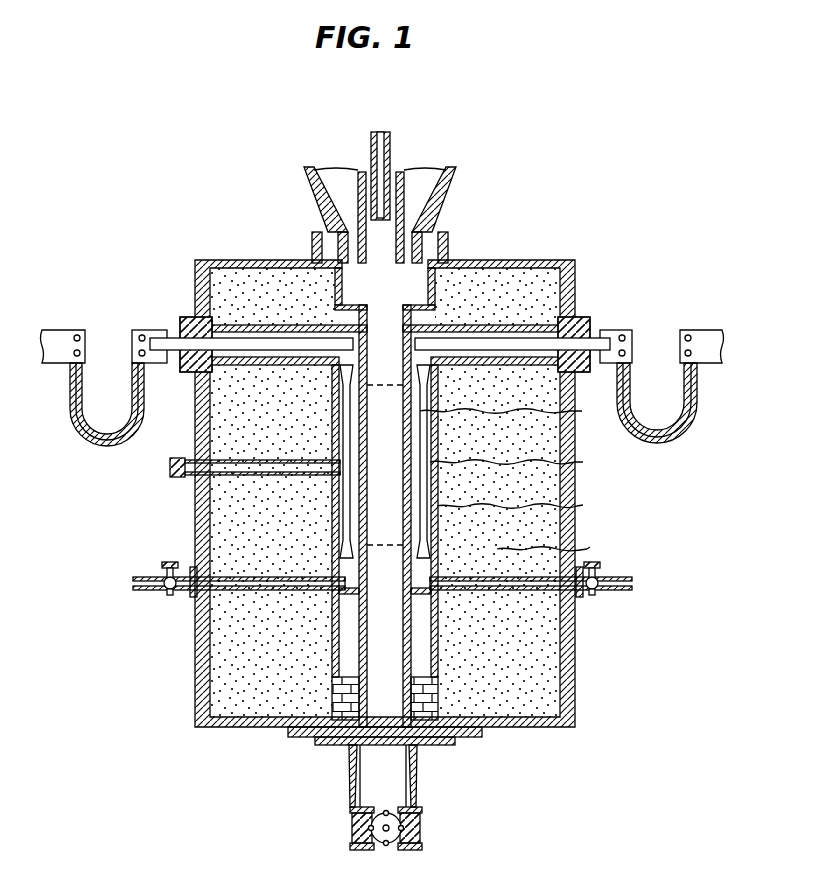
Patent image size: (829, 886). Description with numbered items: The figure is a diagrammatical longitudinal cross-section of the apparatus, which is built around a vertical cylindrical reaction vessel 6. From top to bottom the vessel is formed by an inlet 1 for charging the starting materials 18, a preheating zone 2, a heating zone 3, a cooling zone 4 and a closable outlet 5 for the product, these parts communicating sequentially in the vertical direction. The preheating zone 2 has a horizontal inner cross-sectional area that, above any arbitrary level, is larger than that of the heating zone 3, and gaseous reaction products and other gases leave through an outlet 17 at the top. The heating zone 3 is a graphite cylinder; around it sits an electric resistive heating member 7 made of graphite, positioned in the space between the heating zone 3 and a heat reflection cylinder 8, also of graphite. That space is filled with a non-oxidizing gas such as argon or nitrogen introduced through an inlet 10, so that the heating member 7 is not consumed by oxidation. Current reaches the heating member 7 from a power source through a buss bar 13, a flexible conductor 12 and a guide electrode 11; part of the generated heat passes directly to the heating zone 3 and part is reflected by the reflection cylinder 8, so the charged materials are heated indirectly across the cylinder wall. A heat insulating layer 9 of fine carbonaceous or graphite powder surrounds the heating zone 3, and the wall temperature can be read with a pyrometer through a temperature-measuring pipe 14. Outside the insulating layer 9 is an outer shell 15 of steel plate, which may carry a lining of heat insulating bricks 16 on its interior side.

The inlet 1 is at (412, 253).
The preheating zone 2 is at (394, 349).
The heating zone 3 is at (394, 466).
The cooling zone 4 is at (394, 681).
The closable outlet 5 is at (395, 812).
The cylindrical reaction vessel 6 is at (508, 412).
The electric resistive heating member 7 is at (513, 464).
The heat reflection cylinder 8 is at (517, 505).
The heat insulating layer 9 is at (550, 541).
The inlet for non-oxidizing gas 10 is at (633, 583).
The guide electrode 11 is at (583, 340).
The flexible conductor 12 is at (684, 438).
The buss bar 13 is at (707, 330).
The temperature-measuring pipe 14 is at (165, 472).
The outer shell 15 is at (578, 645).
The heat insulating bricks 16 is at (566, 690).
The outlet 17 is at (390, 150).
The starting materials 18 is at (435, 172).